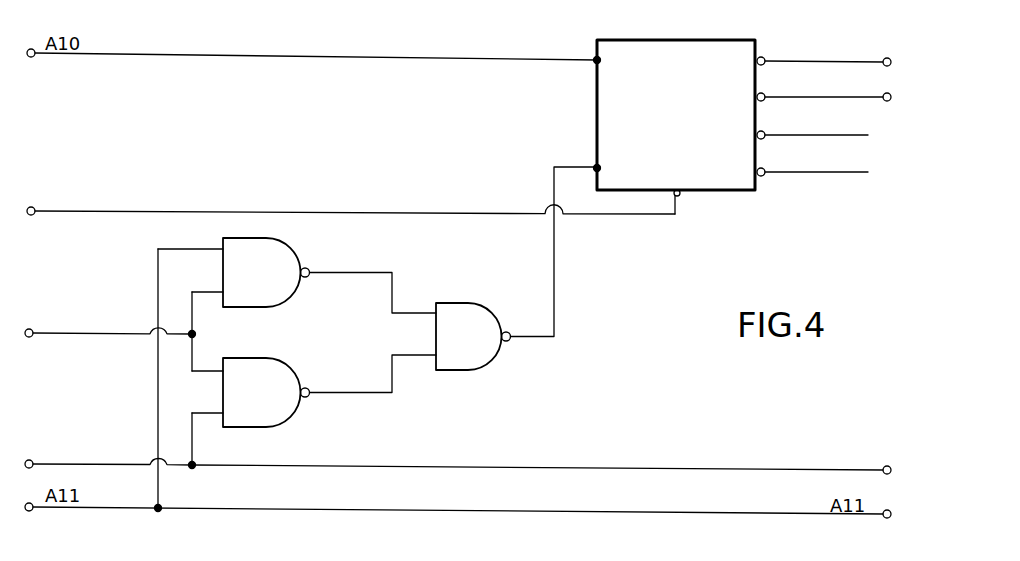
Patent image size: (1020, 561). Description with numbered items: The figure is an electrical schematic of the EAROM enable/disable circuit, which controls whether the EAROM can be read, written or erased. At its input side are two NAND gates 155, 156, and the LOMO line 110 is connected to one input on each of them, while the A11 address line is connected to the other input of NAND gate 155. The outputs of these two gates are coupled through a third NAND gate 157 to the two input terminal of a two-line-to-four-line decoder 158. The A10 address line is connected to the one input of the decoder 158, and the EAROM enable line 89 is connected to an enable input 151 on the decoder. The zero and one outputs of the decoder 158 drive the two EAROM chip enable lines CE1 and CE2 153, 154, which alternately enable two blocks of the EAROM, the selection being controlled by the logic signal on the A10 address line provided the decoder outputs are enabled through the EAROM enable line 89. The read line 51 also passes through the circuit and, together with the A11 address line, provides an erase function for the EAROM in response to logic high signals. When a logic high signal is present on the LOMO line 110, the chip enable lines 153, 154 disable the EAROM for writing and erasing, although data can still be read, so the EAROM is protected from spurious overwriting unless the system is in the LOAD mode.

The read line 51 is at (30, 460).
The EAROM enable line 89 is at (31, 215).
The LOMO line 110 is at (29, 337).
The enable input 151 is at (681, 196).
The chip enable line CE1 153 is at (886, 58).
The chip enable line CE2 154 is at (886, 101).
The NAND gate 155 is at (275, 285).
The NAND gate 156 is at (275, 405).
The NAND gate 157 is at (482, 348).
The two-line-to-four-line decoder 158 is at (693, 162).